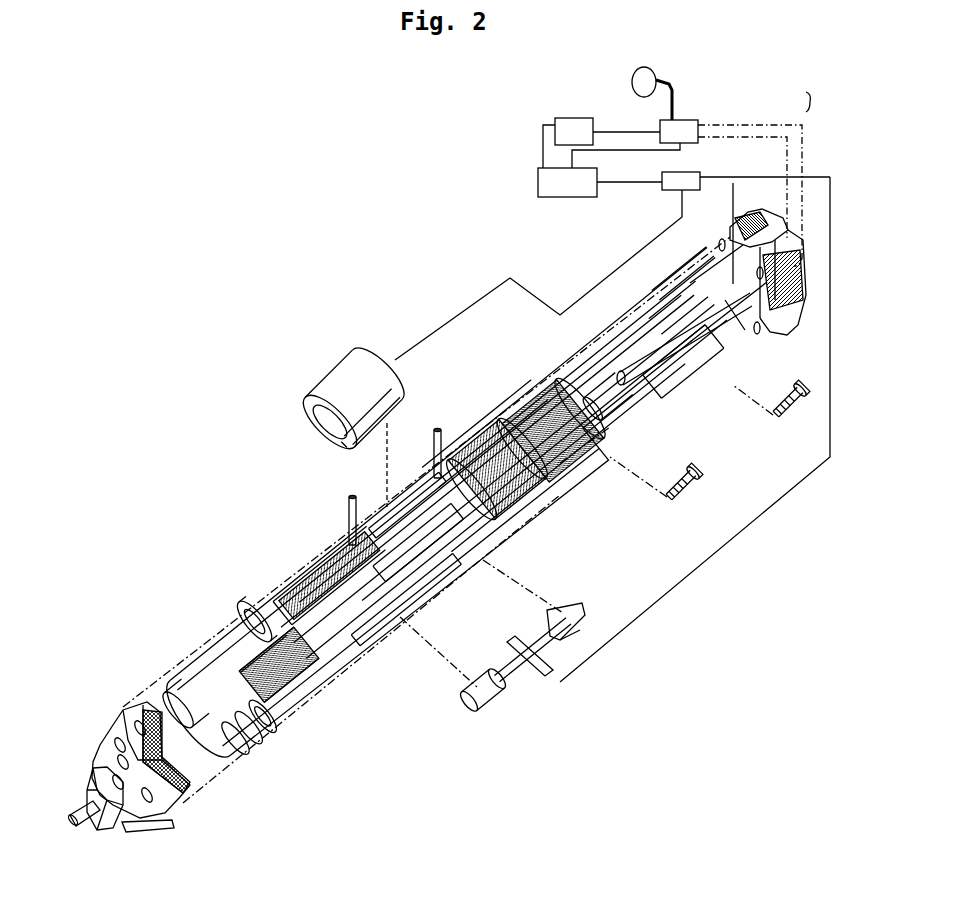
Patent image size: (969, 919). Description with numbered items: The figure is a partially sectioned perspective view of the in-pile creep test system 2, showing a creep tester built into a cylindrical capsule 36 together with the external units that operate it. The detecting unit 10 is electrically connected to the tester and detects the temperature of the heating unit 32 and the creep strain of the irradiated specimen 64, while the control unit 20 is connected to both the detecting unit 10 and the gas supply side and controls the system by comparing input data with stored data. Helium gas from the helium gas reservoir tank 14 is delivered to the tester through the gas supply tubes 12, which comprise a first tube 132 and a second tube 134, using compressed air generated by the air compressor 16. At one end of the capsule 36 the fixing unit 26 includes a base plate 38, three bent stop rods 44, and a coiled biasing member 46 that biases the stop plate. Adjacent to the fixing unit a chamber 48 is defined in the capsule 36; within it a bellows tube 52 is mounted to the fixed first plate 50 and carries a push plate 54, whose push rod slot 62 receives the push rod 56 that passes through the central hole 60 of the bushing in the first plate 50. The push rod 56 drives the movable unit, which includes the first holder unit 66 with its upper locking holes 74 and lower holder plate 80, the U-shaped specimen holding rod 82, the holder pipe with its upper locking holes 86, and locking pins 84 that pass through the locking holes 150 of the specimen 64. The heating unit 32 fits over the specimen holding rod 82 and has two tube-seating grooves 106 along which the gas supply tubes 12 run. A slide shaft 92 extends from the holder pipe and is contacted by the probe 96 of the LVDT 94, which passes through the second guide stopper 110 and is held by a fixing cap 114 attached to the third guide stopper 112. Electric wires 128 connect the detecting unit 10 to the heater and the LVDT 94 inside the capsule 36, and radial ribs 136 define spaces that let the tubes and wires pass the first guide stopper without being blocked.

The in-pile creep test system 2 is at (442, 262).
The detecting unit 10 is at (672, 190).
The gas supply tubes 12 is at (819, 102).
The helium gas reservoir tank 14 is at (633, 80).
The air compressor 16 is at (555, 129).
The control unit 20 is at (548, 197).
The fixing unit 26 is at (84, 830).
The heating unit 32 is at (342, 358).
The cylindrical capsule 36 is at (460, 551).
The base plate 38 is at (148, 700).
The stop rods 44 is at (140, 833).
The coiled biasing member 46 is at (96, 750).
The chamber 48 is at (182, 674).
The first plate 50 is at (264, 592).
The bellows tube 52 is at (247, 743).
The push plate 54 is at (230, 758).
The push rod 56 is at (269, 728).
The central hole 60 is at (384, 639).
The push rod slot 62 is at (243, 656).
The specimen 64 is at (522, 675).
The first holder unit 66 is at (314, 556).
The upper locking holes 74 is at (314, 557).
The lower holder plate 80 is at (453, 598).
The specimen holding rod 82 is at (405, 595).
The locking pins 84 is at (390, 430).
The upper locking holes 86 is at (498, 444).
The slide shaft 92 is at (557, 456).
The LVDT 94 is at (628, 398).
The probe 96 is at (619, 428).
The tube-seating grooves 106 is at (788, 322).
The second guide stopper 110 is at (703, 392).
The third guide stopper 112 is at (712, 360).
The fixing cap 114 is at (724, 324).
The electric wires 128 is at (548, 300).
The first tube 132 is at (766, 125).
The second tube 134 is at (770, 137).
The radial ribs 136 is at (501, 404).
The locking holes 150 is at (482, 702).